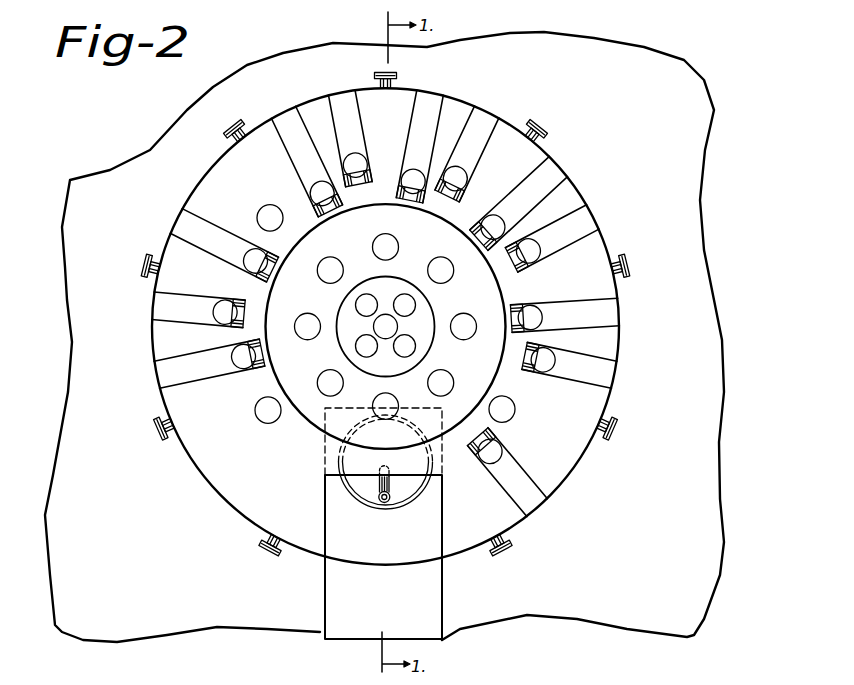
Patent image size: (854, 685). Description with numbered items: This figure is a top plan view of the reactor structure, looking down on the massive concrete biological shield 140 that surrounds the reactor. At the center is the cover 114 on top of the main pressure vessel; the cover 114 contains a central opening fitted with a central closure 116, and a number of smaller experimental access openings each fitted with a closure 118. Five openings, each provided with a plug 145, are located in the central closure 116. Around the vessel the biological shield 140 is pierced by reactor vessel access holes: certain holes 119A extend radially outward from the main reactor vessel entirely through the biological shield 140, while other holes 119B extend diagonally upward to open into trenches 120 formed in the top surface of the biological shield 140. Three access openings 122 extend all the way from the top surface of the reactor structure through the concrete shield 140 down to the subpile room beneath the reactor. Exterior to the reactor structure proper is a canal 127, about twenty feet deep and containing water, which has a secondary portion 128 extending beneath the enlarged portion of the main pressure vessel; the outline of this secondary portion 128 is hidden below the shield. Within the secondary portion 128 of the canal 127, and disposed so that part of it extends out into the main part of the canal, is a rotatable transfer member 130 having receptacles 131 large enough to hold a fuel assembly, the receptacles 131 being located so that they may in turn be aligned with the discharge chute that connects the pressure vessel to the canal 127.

The biological shield 140 is at (706, 229).
The cover 114 is at (270, 297).
The central closure 116 is at (423, 353).
The plug 145 is at (393, 327).
The closure 118 is at (441, 261).
The access openings 122 is at (270, 206).
The trenches 120 is at (612, 317).
The reactor vessel access holes 119B is at (233, 325).
The reactor vessel access holes 119A is at (541, 136).
The canal 127 is at (442, 594).
The secondary portion 128 is at (337, 442).
The receptacles 131 is at (382, 497).
The rotatable transfer member 130 is at (389, 501).